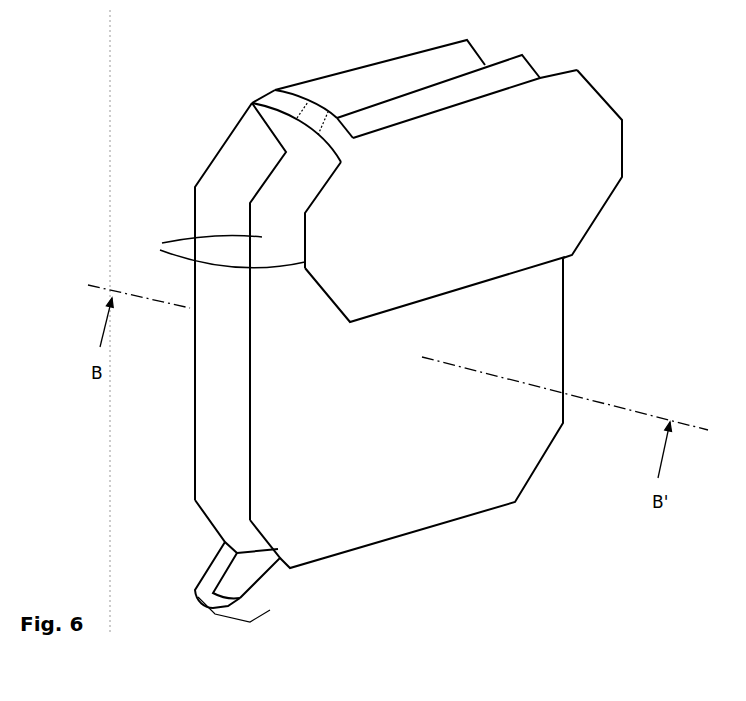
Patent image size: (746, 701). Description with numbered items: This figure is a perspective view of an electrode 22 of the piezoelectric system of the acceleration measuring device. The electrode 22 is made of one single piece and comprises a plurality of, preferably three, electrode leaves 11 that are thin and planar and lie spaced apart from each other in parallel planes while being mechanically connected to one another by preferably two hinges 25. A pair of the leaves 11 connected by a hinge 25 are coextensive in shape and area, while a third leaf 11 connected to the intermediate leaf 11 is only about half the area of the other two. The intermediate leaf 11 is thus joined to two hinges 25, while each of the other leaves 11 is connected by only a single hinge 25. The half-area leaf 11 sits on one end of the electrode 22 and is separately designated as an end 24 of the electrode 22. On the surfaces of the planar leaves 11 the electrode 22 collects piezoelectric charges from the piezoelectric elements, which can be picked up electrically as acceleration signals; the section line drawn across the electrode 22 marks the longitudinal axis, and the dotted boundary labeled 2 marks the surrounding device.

The housing 2 is at (137, 66).
The electrode leaf 11 is at (195, 215).
The electrode 22 is at (520, 328).
The end of the electrode 24 is at (578, 198).
The hinge 25 is at (282, 100).